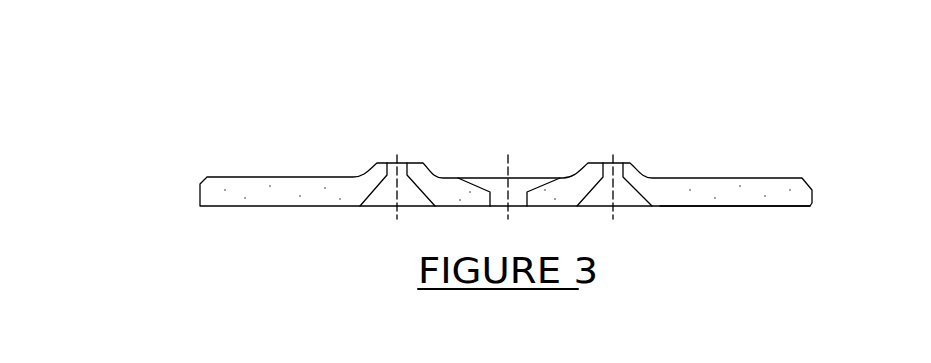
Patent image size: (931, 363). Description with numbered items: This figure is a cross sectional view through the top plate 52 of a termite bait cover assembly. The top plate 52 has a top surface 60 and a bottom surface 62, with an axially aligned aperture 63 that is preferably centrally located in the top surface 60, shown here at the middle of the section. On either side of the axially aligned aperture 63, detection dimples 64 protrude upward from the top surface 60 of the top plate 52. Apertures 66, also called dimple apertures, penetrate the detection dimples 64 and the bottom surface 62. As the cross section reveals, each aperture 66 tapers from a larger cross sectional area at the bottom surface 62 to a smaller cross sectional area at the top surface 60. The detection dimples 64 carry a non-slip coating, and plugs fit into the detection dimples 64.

The top plate 52 is at (155, 186).
The top surface 60 is at (265, 177).
The bottom surface 62 is at (747, 208).
The axially aligned aperture 63 is at (500, 177).
The detection dimples 64 is at (365, 176).
The apertures 66 is at (613, 163).